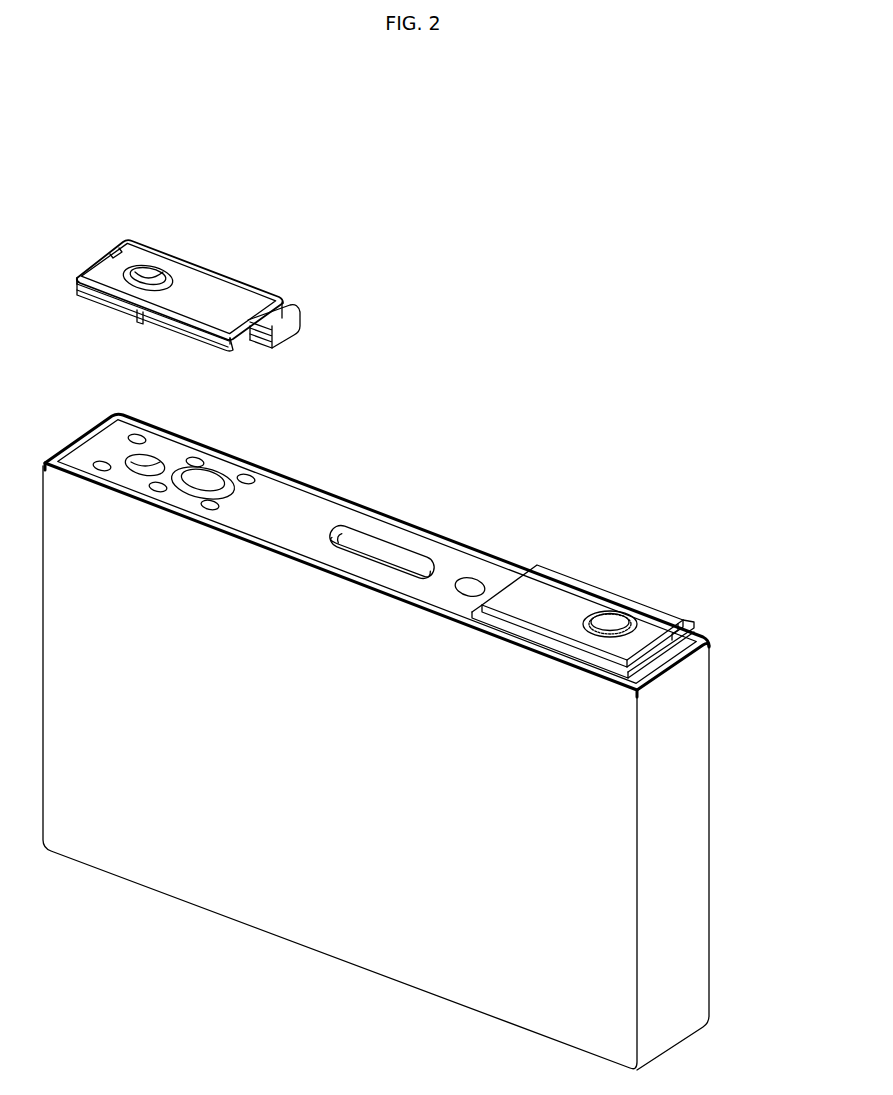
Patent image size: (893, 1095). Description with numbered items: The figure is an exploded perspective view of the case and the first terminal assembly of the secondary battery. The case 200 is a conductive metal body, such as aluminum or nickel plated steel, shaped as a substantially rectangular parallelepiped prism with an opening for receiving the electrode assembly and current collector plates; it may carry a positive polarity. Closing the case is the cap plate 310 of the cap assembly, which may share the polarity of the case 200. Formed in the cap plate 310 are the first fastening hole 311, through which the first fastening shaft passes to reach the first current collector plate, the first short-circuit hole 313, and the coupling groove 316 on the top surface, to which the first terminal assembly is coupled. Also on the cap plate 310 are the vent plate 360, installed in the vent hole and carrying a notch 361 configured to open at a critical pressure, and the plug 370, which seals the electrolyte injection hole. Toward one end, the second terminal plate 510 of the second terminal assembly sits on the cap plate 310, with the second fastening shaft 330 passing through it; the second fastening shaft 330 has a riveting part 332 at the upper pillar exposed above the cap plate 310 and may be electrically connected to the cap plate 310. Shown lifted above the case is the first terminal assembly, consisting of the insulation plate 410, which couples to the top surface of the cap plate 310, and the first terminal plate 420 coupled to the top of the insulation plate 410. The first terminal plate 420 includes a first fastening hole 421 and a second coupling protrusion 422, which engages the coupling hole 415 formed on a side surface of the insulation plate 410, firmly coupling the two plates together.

The case 200 is at (692, 843).
The cap plate 310 is at (453, 557).
The first fastening hole 311 is at (160, 458).
The first short-circuit hole 313 is at (224, 478).
The coupling groove 316 is at (246, 474).
The second fastening shaft 330 is at (608, 620).
The riveting part 332 is at (630, 615).
The vent plate 360 is at (392, 560).
The notch 361 is at (362, 552).
The plug 370 is at (473, 583).
The insulation plate 410 is at (276, 308).
The coupling hole 415 is at (296, 330).
The first terminal plate 420 is at (218, 290).
The first fastening hole 421 is at (172, 268).
The second coupling protrusion 422 is at (262, 336).
The second terminal plate 510 is at (557, 587).